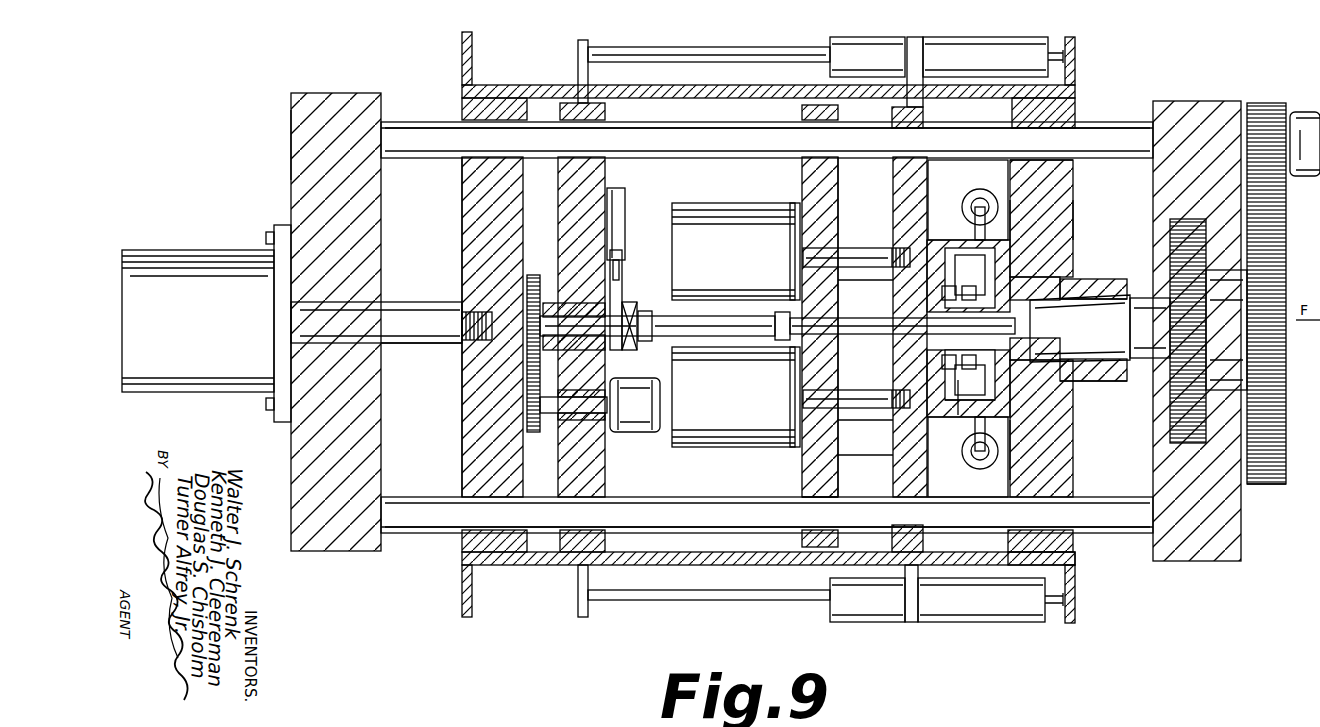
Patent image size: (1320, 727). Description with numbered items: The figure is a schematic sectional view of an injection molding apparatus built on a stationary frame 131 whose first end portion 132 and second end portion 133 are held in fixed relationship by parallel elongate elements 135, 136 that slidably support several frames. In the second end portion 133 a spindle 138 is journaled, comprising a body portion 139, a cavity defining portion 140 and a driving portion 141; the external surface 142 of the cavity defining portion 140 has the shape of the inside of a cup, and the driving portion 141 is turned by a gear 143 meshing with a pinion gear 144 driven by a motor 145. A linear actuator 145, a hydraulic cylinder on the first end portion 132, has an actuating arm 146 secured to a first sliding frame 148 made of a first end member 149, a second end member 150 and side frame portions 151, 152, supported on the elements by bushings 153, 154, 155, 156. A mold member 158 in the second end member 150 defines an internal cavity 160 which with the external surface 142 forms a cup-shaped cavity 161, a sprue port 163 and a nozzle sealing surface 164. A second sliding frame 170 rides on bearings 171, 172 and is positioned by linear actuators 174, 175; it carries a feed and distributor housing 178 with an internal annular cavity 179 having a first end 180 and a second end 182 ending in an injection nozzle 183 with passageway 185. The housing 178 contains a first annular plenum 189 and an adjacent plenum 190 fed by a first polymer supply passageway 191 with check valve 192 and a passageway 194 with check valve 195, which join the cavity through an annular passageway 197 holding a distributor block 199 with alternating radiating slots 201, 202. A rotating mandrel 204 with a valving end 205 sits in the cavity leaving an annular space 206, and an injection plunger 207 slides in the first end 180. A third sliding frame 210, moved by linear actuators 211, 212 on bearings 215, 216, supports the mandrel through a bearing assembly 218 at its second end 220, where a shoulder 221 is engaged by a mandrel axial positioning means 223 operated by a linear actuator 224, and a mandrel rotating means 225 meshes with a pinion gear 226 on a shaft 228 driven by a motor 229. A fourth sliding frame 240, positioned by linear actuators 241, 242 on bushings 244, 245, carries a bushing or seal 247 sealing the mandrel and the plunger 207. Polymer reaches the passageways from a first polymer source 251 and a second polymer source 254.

The stationary frame 131 is at (325, 88).
The first end portion 132 is at (288, 142).
The second end portion 133 is at (1193, 563).
The elongate element 135 is at (698, 525).
The elongate element 136 is at (785, 135).
The spindle 138 is at (1190, 235).
The body portion 139 is at (1146, 328).
The cavity defining portion 140 is at (1080, 328).
The driving portion 141 is at (1226, 330).
The external surface 142 is at (1085, 378).
The spindle rotating gear 143 is at (1265, 486).
The pinion gear 144 is at (1262, 104).
The motor / linear actuator 145 is at (283, 225).
The actuating arm 146 is at (456, 300).
The first sliding frame 148 is at (455, 400).
The first end member 149 is at (462, 440).
The second end member 150 is at (1075, 556).
The side frame portion 151 is at (545, 566).
The side frame portion 152 is at (510, 86).
The bushing 153 is at (462, 490).
The bushing 154 is at (458, 160).
The bushing 155 is at (1008, 540).
The bushing 156 is at (1073, 126).
The mold member 158 is at (1080, 398).
The internal cavity 160 is at (1065, 300).
The cup-shaped cavity 161 is at (1127, 300).
The sprue port 163 is at (1038, 292).
The nozzle engaging and sealing surface 164 is at (1041, 375).
The second sliding frame 170 is at (882, 328).
The bearing 171 is at (862, 541).
The bearing 172 is at (925, 106).
The linear actuator 174 is at (990, 623).
The linear actuator 175 is at (990, 46).
The feed and distributor housing 178 is at (1035, 217).
The internal annular cavity 179 is at (1043, 221).
The first end 180 is at (900, 312).
The second end 182 is at (941, 375).
The injection nozzle 183 is at (1044, 428).
The passageway 185 is at (1041, 212).
The first internal annular plenum 189 is at (956, 275).
The annular plenum 190 is at (932, 375).
The first polymer supply passageway 191 is at (1041, 218).
The check valve 192 is at (966, 264).
The passageway 194 is at (974, 422).
The check valve 195 is at (865, 453).
The annular passageway 197 is at (979, 398).
The distributor block 199 is at (951, 275).
The first radiating slots 201 is at (981, 381).
The second radiating slots 202 is at (945, 292).
The rotating mandrel 204 is at (895, 396).
The valving end 205 is at (1036, 445).
The annular space 206 is at (994, 402).
The injection plunger 207 is at (865, 280).
The third sliding frame 210 is at (606, 475).
The linear actuator 211 is at (785, 601).
The linear actuator 212 is at (700, 58).
The bearing 215 is at (606, 540).
The bearing 216 is at (580, 104).
The bearing assembly 218 is at (624, 348).
The second end 220 is at (614, 310).
The shoulder 221 is at (642, 320).
The mandrel axial positioning means 223 is at (620, 270).
The linear actuator 224 is at (612, 190).
The mandrel rotating means 225 is at (528, 300).
The pinion gear 226 is at (527, 405).
The shaft 228 is at (560, 407).
The motor 229 is at (635, 432).
The fourth sliding frame 240 is at (802, 470).
The linear actuator 241 is at (870, 408).
The linear actuator 242 is at (815, 262).
The bushing 244 is at (802, 493).
The bushing 245 is at (805, 165).
The bushing or seal 247 is at (790, 372).
The first polymer source 251 is at (986, 195).
The second polymer source 254 is at (975, 462).